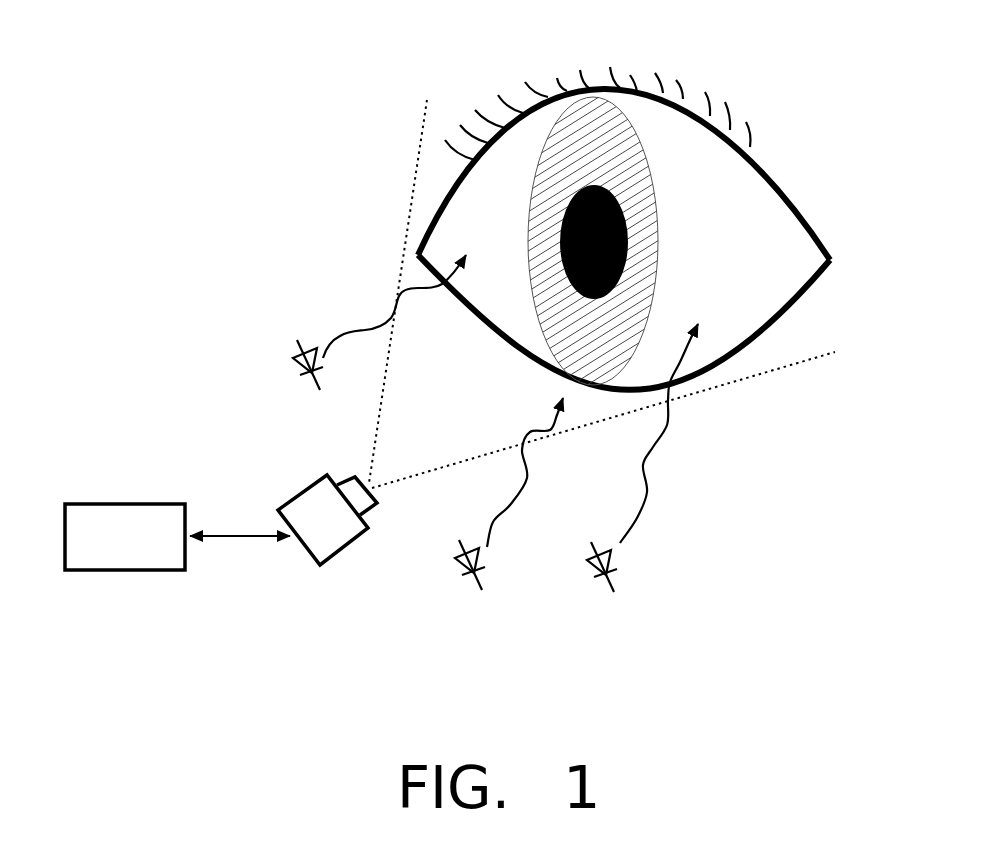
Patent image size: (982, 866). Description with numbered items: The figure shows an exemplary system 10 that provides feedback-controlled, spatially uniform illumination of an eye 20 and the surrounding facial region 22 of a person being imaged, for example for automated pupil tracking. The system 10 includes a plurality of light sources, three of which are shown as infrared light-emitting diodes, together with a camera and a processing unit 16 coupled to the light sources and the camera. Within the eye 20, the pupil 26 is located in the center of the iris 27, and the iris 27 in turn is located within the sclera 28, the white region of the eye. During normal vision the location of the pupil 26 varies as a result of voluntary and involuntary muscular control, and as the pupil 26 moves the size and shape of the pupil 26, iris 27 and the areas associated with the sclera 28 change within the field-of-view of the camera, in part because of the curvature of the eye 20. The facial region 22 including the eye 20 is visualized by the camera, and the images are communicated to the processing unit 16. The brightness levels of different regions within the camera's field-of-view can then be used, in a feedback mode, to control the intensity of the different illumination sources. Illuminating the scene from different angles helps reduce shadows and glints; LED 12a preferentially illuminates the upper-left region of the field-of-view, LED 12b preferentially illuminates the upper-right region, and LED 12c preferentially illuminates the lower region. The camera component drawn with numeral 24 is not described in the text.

The system 10 is at (190, 597).
The LED 12a is at (297, 324).
The LED 12b is at (616, 581).
The LED 12c is at (475, 581).
The processing unit 16 is at (128, 494).
The eye 20 is at (544, 86).
The facial region 22 is at (800, 93).
The camera 24 is at (320, 578).
The pupil 26 is at (593, 181).
The iris 27 is at (622, 137).
The sclera 28 is at (739, 220).